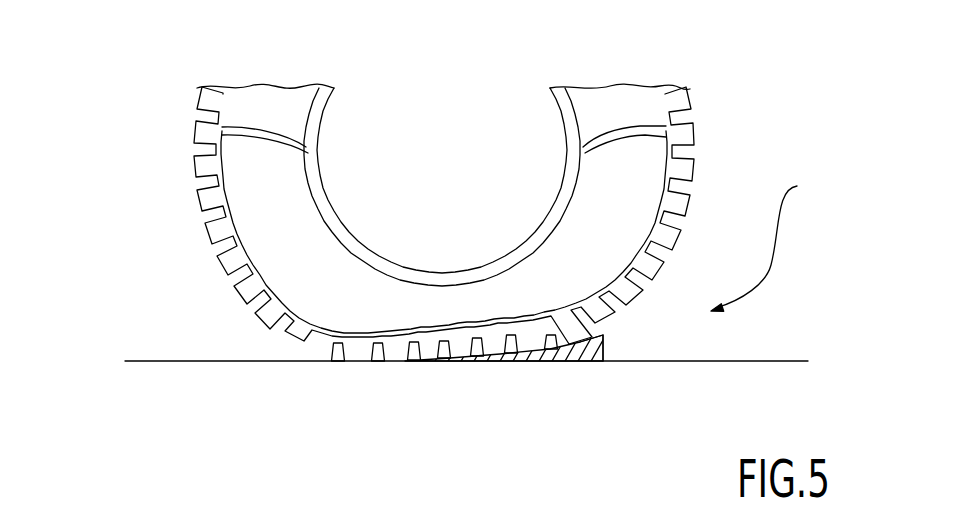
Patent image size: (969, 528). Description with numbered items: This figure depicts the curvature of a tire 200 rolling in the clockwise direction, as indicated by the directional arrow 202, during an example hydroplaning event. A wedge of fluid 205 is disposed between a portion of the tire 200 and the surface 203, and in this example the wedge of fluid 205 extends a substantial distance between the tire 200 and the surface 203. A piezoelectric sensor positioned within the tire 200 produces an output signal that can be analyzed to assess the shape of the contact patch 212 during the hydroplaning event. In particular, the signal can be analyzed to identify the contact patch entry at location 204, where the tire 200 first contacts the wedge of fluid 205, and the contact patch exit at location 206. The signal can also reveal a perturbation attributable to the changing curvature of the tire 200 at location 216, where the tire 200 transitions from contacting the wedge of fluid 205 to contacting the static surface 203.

The tire 200 is at (690, 100).
The directional arrow 202 is at (774, 242).
The surface 203 is at (767, 361).
The contact patch entry location 204 is at (605, 335).
The wedge of fluid 205 is at (552, 361).
The contact patch exit location 206 is at (320, 361).
The contact patch 212 is at (355, 353).
The curvature transition location 216 is at (405, 362).